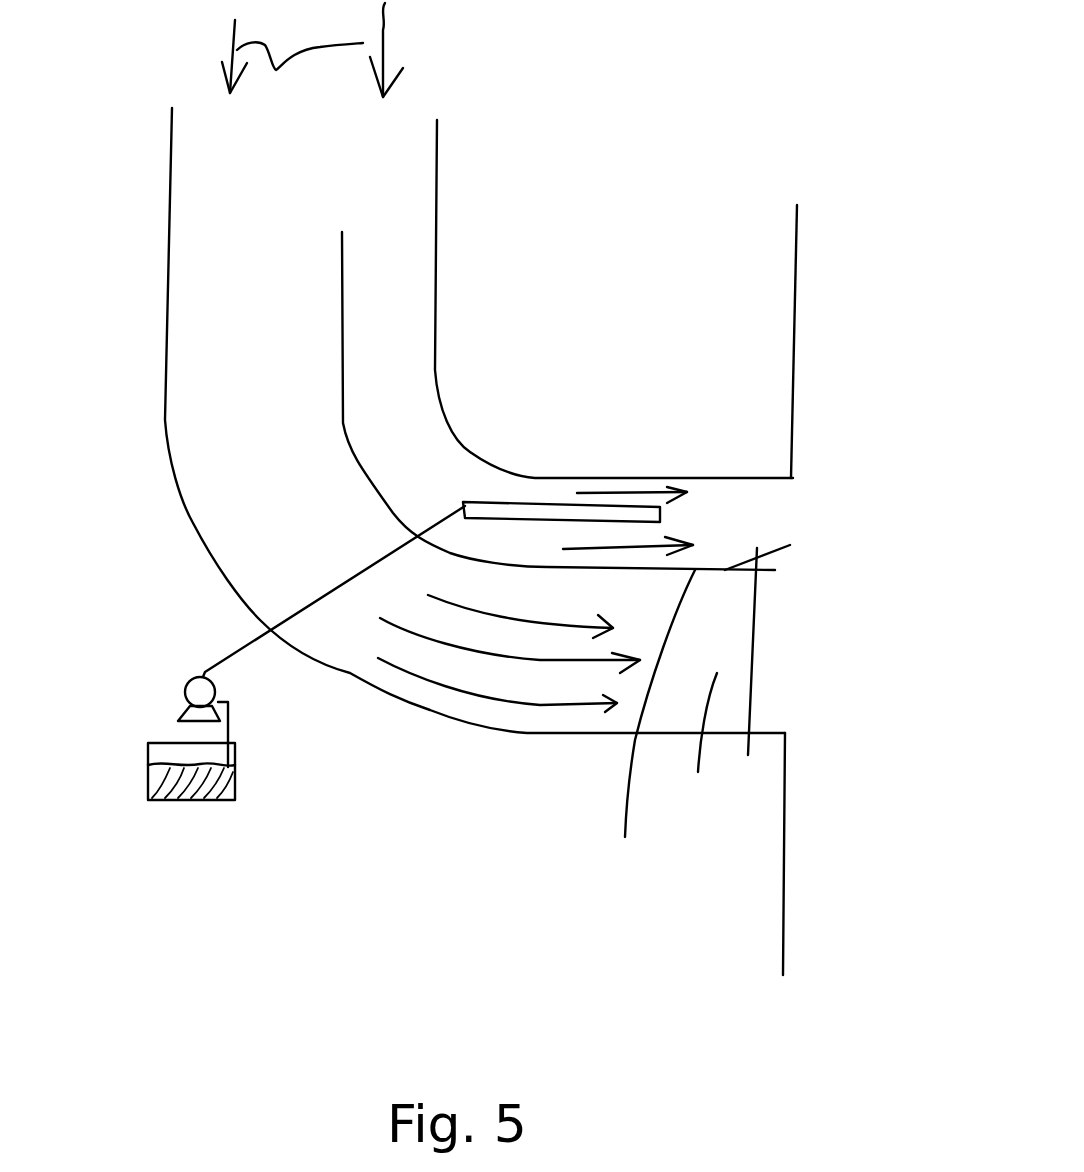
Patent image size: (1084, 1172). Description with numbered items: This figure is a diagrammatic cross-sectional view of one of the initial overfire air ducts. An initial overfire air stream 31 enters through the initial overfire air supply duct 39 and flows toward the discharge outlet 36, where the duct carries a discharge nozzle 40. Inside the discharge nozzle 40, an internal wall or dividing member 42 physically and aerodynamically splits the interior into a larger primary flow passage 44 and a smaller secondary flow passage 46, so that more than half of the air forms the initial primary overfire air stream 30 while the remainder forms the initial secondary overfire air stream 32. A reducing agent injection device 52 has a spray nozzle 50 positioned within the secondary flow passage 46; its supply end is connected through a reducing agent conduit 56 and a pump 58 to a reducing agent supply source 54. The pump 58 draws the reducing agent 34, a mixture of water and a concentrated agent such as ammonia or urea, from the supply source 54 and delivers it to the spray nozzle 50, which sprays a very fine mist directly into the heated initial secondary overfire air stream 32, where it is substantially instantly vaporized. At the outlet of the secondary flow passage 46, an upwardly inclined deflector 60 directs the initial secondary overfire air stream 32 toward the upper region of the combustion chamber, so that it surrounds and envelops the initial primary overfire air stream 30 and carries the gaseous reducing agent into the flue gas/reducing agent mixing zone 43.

The initial primary overfire air stream 30 is at (598, 668).
The initial overfire air stream 31 is at (312, 71).
The initial secondary overfire air stream 32 is at (607, 497).
The reducing agent 34 is at (183, 782).
The discharge outlet 36 is at (797, 612).
The initial overfire air supply duct 39 is at (666, 338).
The discharge nozzle 40 is at (523, 737).
The internal dividing member 42 is at (647, 734).
The flue gas/reducing agent mixing zone 43 is at (942, 618).
The primary flow passage 44 is at (684, 748).
The secondary flow passage 46 is at (717, 495).
The spray nozzle 50 is at (502, 513).
The reducing agent injection device 52 is at (325, 569).
The reducing agent supply source 54 is at (235, 770).
The reducing agent conduit 56 is at (238, 647).
The pump 58 is at (185, 690).
The deflector 60 is at (747, 679).